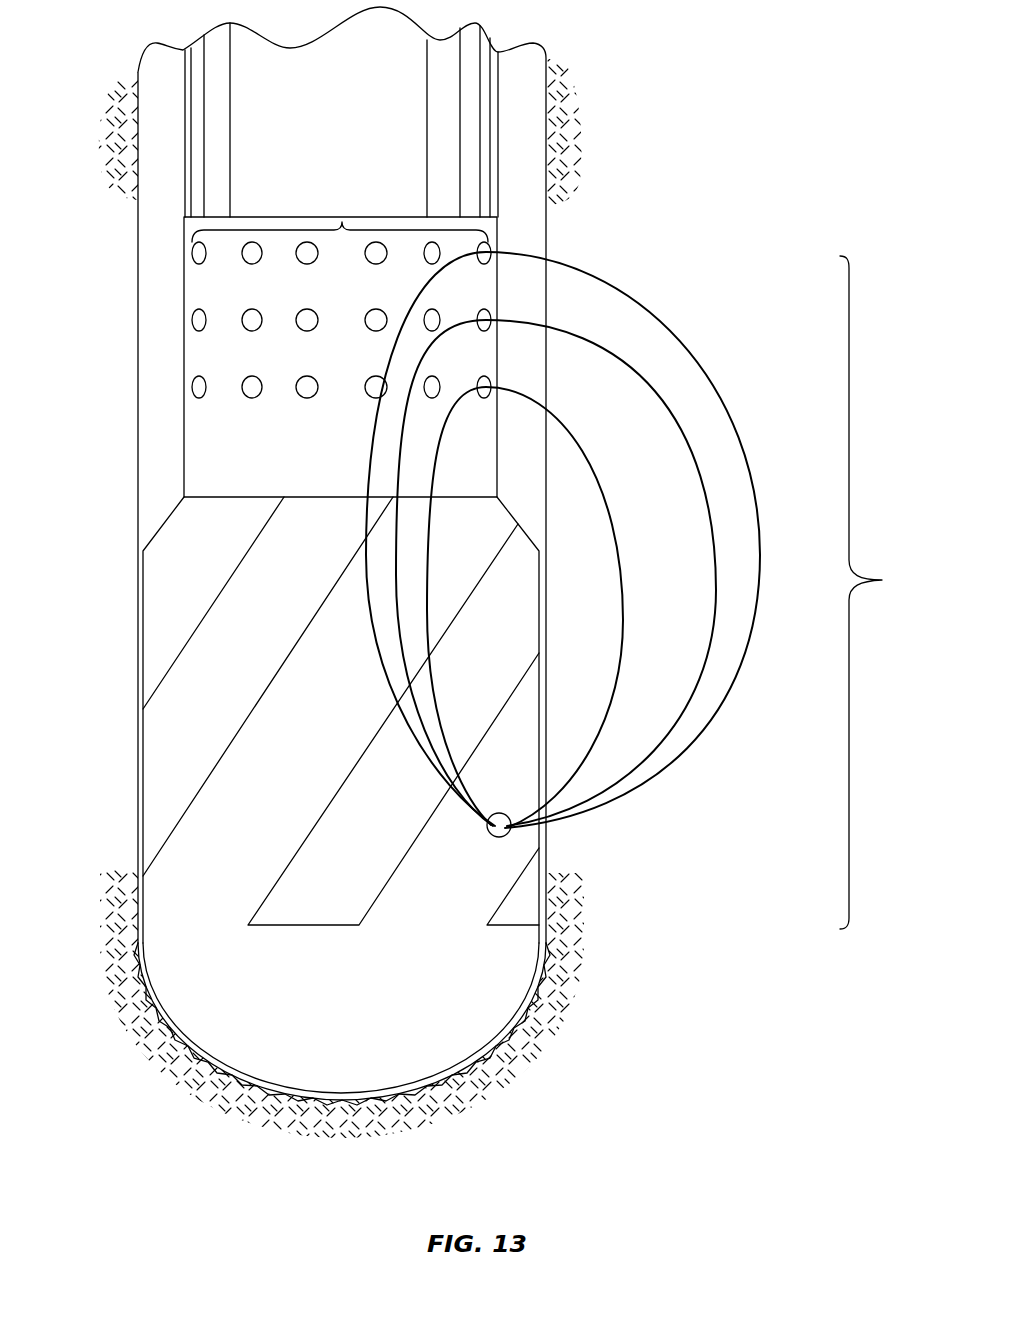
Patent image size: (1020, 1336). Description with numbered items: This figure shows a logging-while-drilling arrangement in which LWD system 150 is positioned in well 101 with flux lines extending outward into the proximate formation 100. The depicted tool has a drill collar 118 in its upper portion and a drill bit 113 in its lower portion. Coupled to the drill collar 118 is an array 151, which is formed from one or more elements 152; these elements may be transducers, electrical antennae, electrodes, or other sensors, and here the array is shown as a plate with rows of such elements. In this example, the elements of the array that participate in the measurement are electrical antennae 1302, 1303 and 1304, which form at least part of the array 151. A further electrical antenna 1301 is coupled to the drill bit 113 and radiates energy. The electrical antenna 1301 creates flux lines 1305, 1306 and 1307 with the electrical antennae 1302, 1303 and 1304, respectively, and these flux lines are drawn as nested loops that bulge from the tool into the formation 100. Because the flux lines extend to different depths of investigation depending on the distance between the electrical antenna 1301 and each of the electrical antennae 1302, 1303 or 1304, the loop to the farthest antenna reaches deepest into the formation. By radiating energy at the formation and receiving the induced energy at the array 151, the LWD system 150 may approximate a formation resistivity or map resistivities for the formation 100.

The formation 100 is at (818, 710).
The well 101 is at (550, 190).
The drill bit 113 is at (180, 746).
The drill collar 118 is at (320, 457).
The LWD system 150 is at (884, 592).
The array 151 is at (340, 222).
The elements 152 is at (244, 306).
The electrical antenna 1301 is at (513, 834).
The electrical antenna 1302 is at (498, 375).
The electrical antenna 1303 is at (498, 306).
The electrical antenna 1304 is at (498, 240).
The flux line 1305 is at (619, 532).
The flux line 1306 is at (678, 425).
The flux line 1307 is at (698, 343).